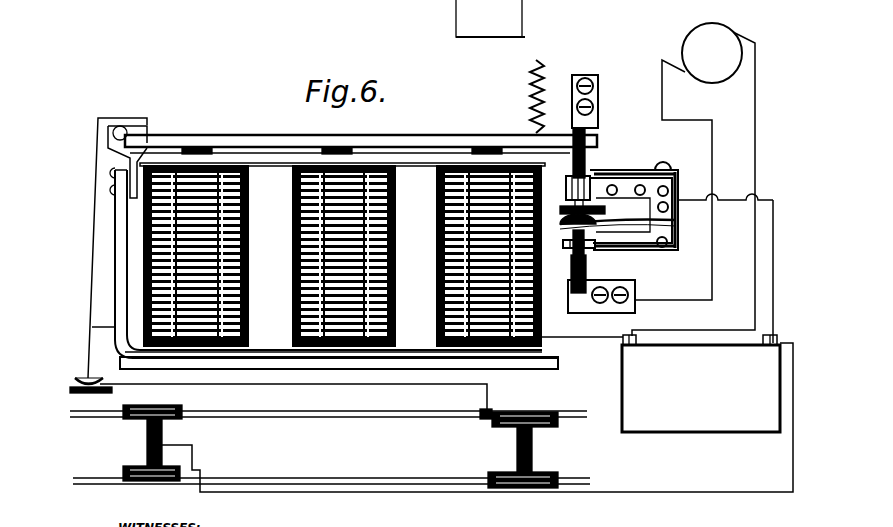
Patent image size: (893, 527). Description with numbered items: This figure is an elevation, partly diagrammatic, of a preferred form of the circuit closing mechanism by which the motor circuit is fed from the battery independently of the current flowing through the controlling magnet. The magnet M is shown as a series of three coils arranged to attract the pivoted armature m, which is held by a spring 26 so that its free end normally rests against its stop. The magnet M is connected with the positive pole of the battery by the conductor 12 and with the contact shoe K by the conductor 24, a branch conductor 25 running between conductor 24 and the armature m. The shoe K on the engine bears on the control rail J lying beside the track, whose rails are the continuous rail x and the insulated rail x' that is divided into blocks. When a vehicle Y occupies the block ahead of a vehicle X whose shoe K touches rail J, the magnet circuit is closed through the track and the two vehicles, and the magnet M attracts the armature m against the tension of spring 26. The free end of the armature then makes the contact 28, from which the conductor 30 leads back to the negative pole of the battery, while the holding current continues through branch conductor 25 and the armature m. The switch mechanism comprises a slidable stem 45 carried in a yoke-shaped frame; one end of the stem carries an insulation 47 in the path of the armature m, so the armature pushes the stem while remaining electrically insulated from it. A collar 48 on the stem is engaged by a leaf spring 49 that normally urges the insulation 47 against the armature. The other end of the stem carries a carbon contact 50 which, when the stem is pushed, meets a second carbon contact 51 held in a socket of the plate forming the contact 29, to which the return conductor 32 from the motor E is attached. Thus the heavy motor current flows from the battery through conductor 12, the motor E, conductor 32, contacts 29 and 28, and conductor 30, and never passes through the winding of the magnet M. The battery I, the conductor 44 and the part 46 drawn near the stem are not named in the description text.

The armature m is at (214, 134).
The magnet M is at (160, 243).
The branch conductor 25 is at (97, 200).
The conductor 24 is at (88, 345).
The contact shoe K is at (82, 378).
The control rail J is at (73, 392).
The vehicle X is at (147, 447).
The vehicle Y is at (533, 447).
The continuous rail x is at (331, 471).
The insulated rail section x' is at (328, 430).
The conductor wire 44 is at (492, 497).
The battery I is at (701, 383).
The conductor 30 is at (774, 248).
The conductor 12 is at (756, 140).
The conductor 32 is at (712, 153).
The motor E is at (722, 40).
The spring 26 is at (530, 91).
The contact 29 is at (600, 95).
The slidable stem 45 is at (572, 160).
The insulation 47 is at (602, 136).
The contact 28 is at (625, 170).
The collar 48 is at (605, 210).
The leaf spring 49 is at (677, 220).
The lower contact 46 is at (643, 252).
The carbon contact 50 is at (589, 275).
The carbon contact 51 is at (573, 273).